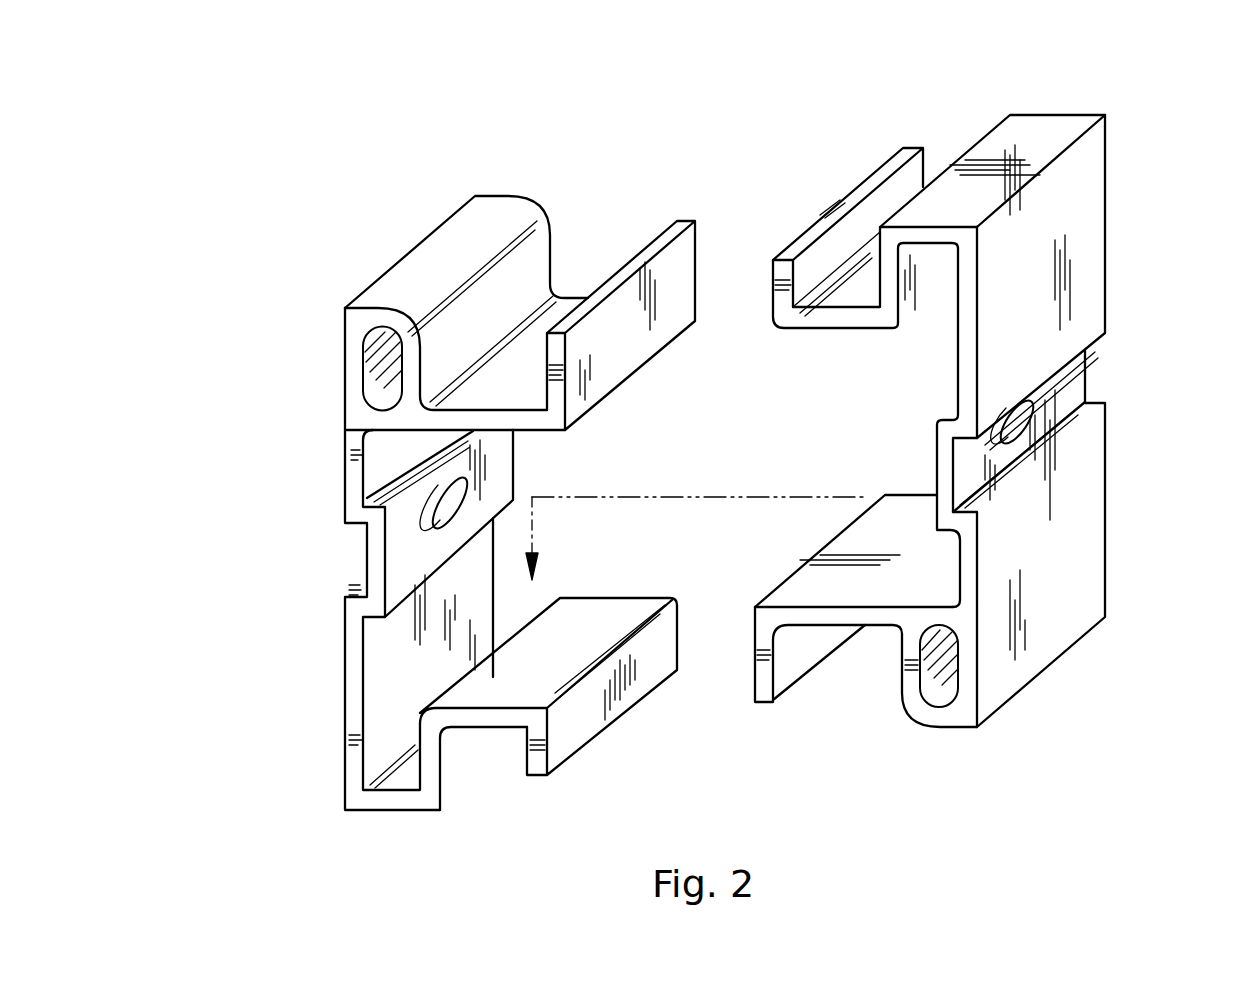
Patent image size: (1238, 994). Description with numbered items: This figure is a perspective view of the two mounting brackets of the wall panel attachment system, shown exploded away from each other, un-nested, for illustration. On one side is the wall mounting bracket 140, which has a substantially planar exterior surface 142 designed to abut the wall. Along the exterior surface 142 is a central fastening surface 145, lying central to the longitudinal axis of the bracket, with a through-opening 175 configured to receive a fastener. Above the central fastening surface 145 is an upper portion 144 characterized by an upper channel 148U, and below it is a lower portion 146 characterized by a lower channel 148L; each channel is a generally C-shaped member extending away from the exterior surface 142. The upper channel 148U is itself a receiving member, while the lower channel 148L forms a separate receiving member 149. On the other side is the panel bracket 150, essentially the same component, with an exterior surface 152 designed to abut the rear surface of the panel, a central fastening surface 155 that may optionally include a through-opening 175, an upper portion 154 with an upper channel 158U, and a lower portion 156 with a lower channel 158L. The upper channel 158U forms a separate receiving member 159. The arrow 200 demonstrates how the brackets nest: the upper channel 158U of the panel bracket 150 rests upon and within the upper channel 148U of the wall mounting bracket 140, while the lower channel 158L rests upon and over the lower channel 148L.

The wall mounting bracket 140 is at (277, 218).
The exterior surface 142 is at (347, 411).
The upper portion 144 is at (535, 258).
The central fastening surface 145 is at (503, 484).
The lower portion 146 is at (377, 712).
The upper channel 148U is at (526, 392).
The lower channel 148L is at (578, 608).
The receiving member 149 is at (398, 780).
The panel bracket 150 is at (1115, 85).
The exterior surface 152 is at (1080, 217).
The upper portion 154 is at (923, 180).
The central fastening surface 155 is at (1073, 373).
The lower portion 156 is at (898, 682).
The upper channel 158U is at (842, 298).
The lower channel 158L is at (823, 625).
The receiving member 159 is at (915, 283).
The through-opening 175 is at (452, 496).
The arrow 200 is at (672, 495).